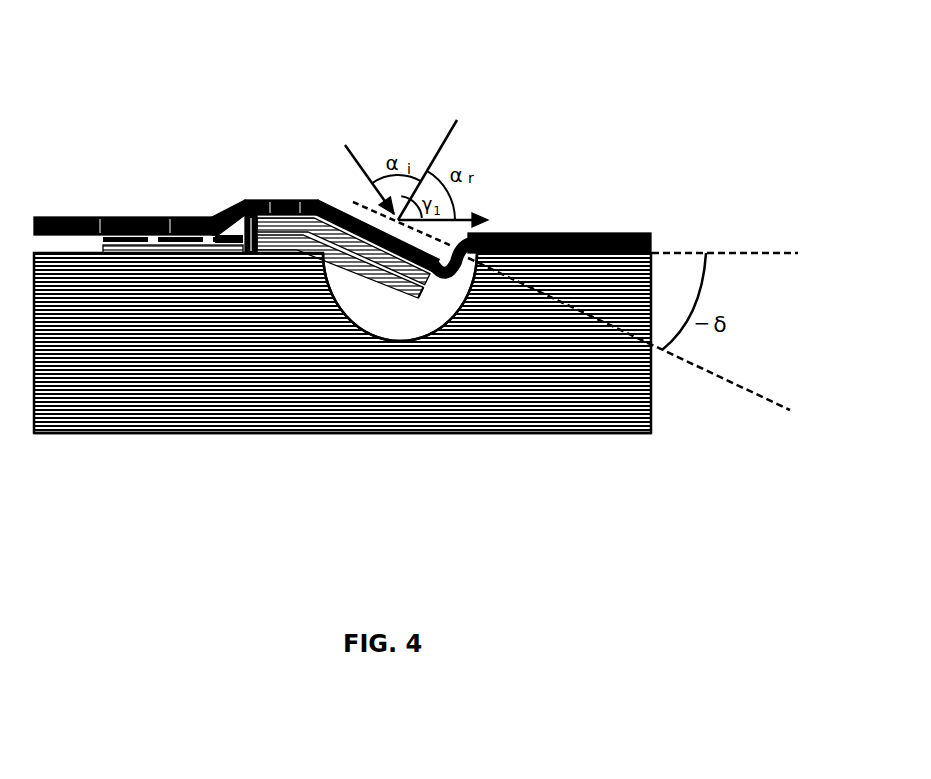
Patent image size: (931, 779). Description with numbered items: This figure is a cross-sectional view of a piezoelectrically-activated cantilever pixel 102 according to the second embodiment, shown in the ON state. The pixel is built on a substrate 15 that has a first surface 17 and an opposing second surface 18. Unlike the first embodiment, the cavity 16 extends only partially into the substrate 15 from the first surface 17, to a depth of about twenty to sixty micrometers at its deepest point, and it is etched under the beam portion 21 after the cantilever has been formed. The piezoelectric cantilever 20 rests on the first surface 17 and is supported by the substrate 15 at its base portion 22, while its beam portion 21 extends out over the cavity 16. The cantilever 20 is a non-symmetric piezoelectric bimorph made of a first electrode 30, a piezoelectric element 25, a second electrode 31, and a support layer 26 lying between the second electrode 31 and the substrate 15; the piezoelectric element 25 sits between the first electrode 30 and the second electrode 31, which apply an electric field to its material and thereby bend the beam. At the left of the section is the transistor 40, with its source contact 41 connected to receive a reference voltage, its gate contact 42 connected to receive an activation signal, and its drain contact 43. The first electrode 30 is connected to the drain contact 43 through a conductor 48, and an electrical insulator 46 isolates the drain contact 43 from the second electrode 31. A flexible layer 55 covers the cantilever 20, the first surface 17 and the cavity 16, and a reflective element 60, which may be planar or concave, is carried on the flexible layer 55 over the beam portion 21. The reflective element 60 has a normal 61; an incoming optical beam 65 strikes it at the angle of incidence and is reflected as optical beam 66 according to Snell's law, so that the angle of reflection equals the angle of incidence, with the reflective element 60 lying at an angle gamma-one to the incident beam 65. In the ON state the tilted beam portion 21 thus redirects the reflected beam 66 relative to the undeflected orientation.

The substrate 15 is at (563, 420).
The cavity 16 is at (392, 330).
The first surface 17 is at (73, 253).
The second surface 18 is at (100, 433).
The piezoelectric cantilever 20 is at (324, 97).
The beam portion 21 is at (378, 308).
The base portion 22 is at (253, 113).
The piezoelectric element 25 is at (288, 228).
The support layer 26 is at (378, 270).
The first electrode 30 is at (313, 203).
The second electrode 31 is at (428, 293).
The transistor 40 is at (188, 253).
The source contact 41 is at (117, 233).
The gate contact 42 is at (173, 225).
The drain contact 43 is at (220, 233).
The electrical insulator 46 is at (252, 253).
The conductor 48 is at (235, 207).
The flexible layer 55 is at (538, 233).
The reflective element 60 is at (350, 207).
The normal 61 is at (447, 138).
The optical beam 65 is at (358, 160).
The optical beam 66 is at (466, 236).
The piezoelectrically-activated cantilever pixel 102 is at (332, 484).